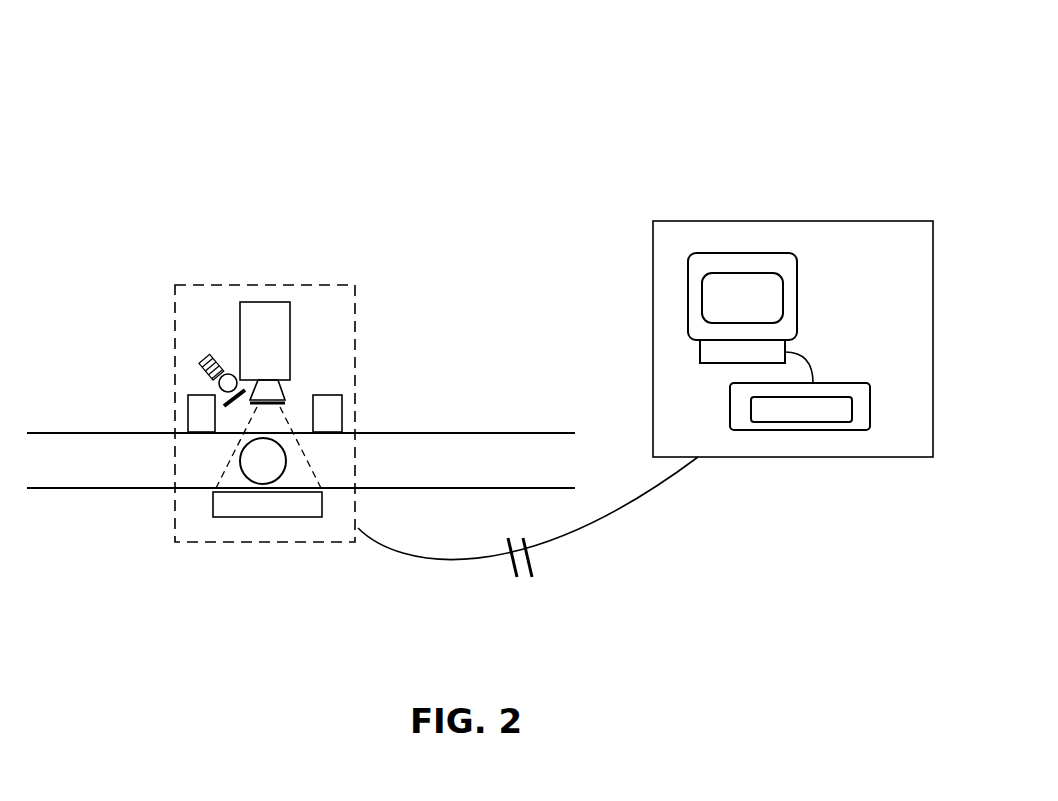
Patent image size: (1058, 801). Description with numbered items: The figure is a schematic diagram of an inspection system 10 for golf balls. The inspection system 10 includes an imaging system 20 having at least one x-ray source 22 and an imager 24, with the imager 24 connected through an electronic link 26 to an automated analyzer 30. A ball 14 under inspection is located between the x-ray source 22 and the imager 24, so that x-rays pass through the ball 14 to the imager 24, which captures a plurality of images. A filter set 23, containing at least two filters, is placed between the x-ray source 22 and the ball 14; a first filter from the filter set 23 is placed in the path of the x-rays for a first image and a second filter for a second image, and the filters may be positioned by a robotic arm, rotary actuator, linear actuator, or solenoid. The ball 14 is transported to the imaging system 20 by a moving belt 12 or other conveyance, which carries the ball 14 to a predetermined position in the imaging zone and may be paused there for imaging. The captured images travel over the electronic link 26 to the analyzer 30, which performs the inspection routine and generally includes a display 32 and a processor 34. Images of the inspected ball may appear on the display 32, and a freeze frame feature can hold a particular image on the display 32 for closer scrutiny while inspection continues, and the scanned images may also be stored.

The inspection system 10 is at (137, 92).
The moving belt 12 is at (48, 432).
The ball 14 is at (230, 467).
The imaging system 20 is at (213, 283).
The x-ray source 22 is at (304, 301).
The filter set 23 is at (288, 402).
The imager 24 is at (277, 523).
The electronic link 26 is at (562, 550).
The automated analyzer 30 is at (780, 308).
The display 32 is at (800, 298).
The processor 34 is at (870, 410).